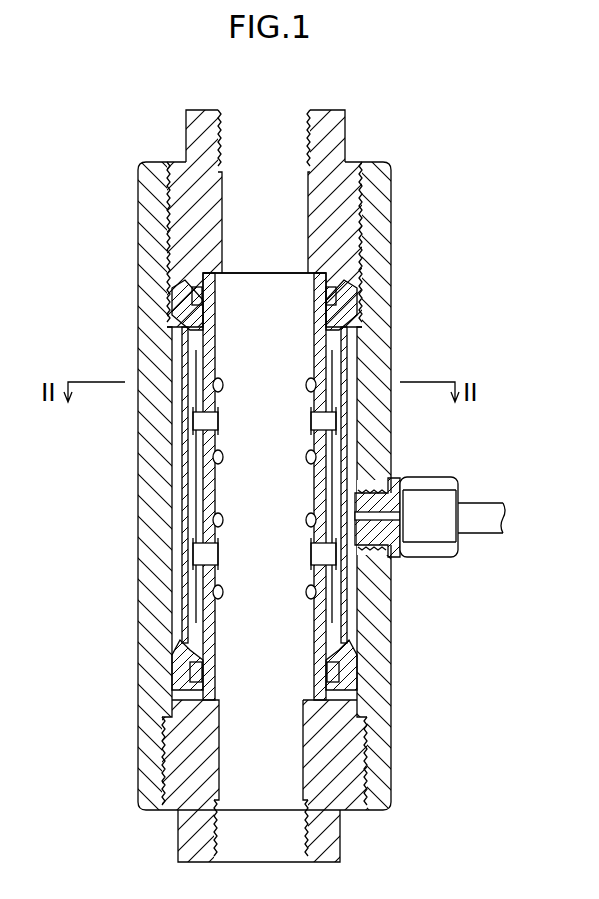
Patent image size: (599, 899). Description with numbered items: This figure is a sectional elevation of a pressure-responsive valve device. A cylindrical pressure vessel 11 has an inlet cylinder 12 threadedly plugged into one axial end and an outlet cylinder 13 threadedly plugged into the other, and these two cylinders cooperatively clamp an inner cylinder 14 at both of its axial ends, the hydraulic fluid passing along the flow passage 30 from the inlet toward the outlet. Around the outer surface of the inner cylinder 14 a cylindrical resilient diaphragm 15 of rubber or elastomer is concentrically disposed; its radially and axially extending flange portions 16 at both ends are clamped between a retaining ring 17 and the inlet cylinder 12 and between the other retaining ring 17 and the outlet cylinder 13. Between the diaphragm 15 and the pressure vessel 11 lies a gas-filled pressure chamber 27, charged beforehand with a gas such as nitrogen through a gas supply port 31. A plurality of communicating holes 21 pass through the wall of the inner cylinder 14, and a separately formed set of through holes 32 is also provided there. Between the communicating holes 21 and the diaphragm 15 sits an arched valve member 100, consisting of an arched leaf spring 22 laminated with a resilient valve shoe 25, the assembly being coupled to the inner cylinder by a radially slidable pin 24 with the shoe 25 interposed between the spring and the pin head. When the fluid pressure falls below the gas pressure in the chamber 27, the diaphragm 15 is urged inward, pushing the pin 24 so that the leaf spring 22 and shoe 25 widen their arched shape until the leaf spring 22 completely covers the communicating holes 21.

The cylindrical pressure vessel 11 is at (391, 188).
The inlet cylinder 12 is at (347, 128).
The outlet cylinder 13 is at (340, 832).
The inner cylinder 14 is at (318, 276).
The resilient diaphragm 15 is at (186, 336).
The flange portions 16 is at (338, 690).
The retaining ring 17 is at (190, 296).
The communicating holes 21 is at (222, 464).
The arched leaf spring 22 is at (345, 600).
The pin 24 is at (192, 424).
The resilient valve shoe 25 is at (343, 372).
The pressure chamber 27 is at (177, 528).
The flow passage 30 is at (232, 690).
The gas supply port 31 is at (389, 556).
The through holes 32 is at (192, 554).
The arched valve member 100 is at (182, 600).